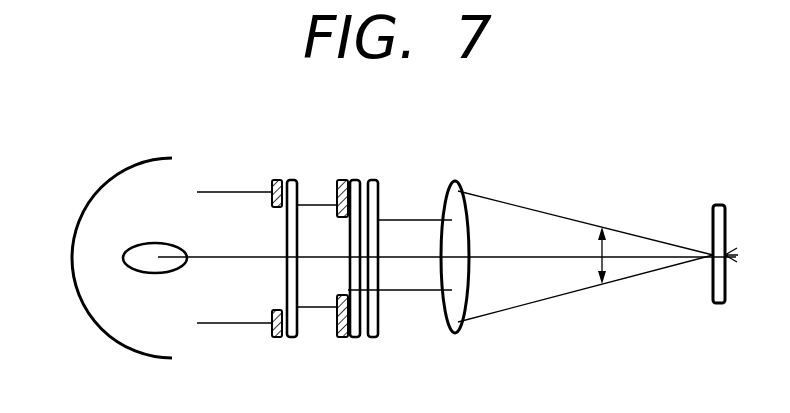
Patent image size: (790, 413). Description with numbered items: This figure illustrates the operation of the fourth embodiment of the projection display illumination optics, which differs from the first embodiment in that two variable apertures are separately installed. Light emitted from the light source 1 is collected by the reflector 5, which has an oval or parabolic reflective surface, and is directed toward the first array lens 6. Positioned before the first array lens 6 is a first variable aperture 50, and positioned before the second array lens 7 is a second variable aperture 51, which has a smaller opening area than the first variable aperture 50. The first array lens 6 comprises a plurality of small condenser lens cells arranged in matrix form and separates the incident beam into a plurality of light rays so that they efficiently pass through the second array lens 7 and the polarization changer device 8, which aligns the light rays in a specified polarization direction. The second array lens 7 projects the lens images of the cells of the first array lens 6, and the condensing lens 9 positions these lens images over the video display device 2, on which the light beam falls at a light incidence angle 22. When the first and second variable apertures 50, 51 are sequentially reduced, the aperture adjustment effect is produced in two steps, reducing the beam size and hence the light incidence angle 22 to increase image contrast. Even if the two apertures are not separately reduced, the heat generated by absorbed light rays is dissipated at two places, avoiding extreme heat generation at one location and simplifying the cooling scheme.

The light source 1 is at (133, 252).
The video display device 2 is at (722, 206).
The reflector 5 is at (94, 314).
The first array lens 6 is at (292, 338).
The second array lens 7 is at (355, 338).
The polarization changer device 8 is at (376, 338).
The condensing lens 9 is at (455, 196).
The light incidence angle 22 is at (553, 256).
The first variable aperture 50 is at (272, 182).
The second variable aperture 51 is at (339, 182).